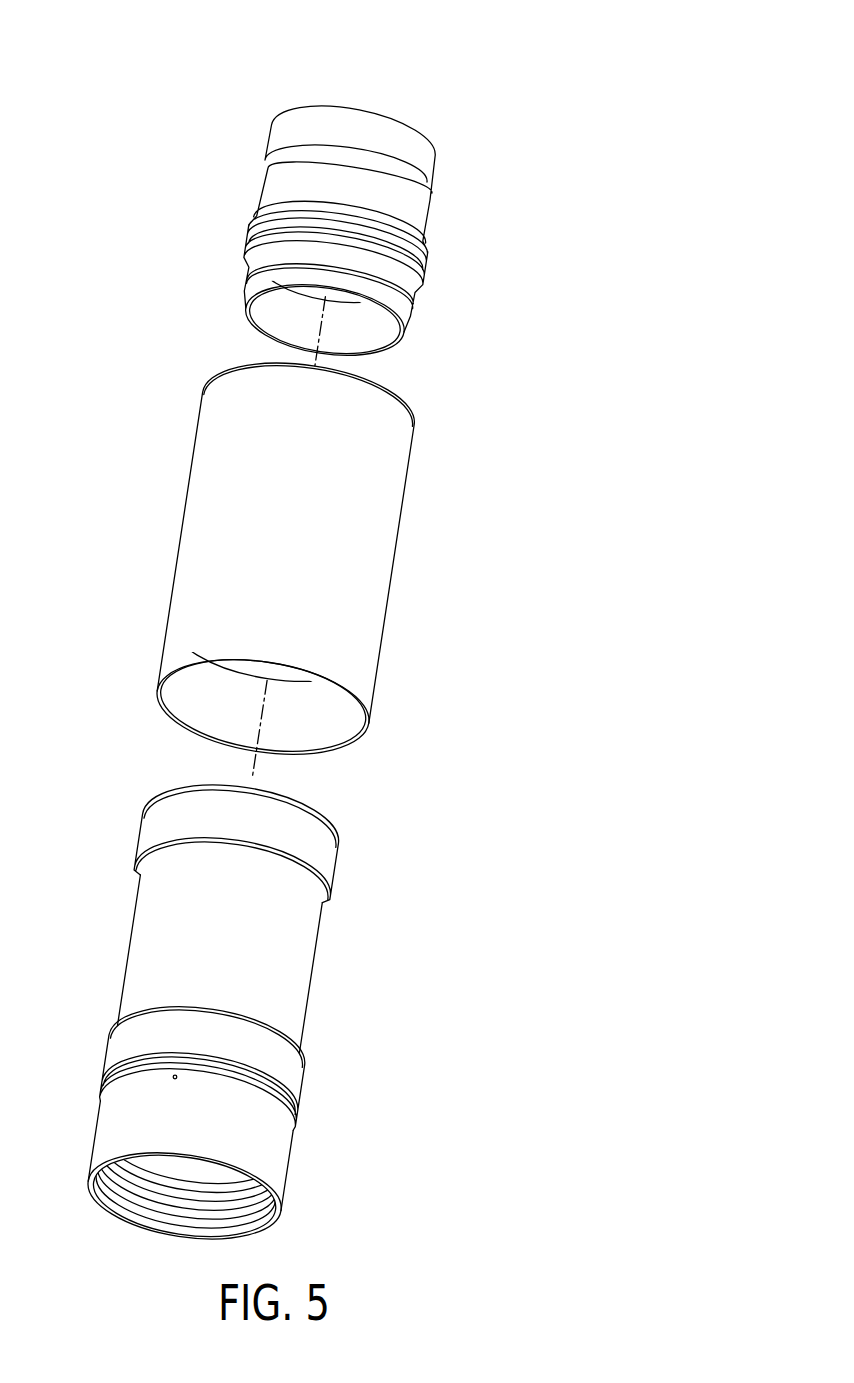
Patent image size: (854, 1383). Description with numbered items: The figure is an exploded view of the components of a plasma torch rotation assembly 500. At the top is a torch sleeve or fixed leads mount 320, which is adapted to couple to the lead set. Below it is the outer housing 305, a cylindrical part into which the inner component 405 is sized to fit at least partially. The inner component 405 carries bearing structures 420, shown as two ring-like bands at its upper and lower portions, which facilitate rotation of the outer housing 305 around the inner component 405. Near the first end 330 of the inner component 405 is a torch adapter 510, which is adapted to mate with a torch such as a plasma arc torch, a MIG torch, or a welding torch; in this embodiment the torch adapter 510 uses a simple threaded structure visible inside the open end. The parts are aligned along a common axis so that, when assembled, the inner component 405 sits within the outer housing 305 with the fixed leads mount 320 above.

The plasma torch rotation assembly 500 is at (164, 60).
The fixed leads mount 320 is at (437, 173).
The outer housing 305 is at (375, 548).
The bearing structures 420 is at (328, 858).
The inner component 405 is at (300, 950).
The first end 330 is at (290, 1170).
The torch adapter 510 is at (105, 1190).